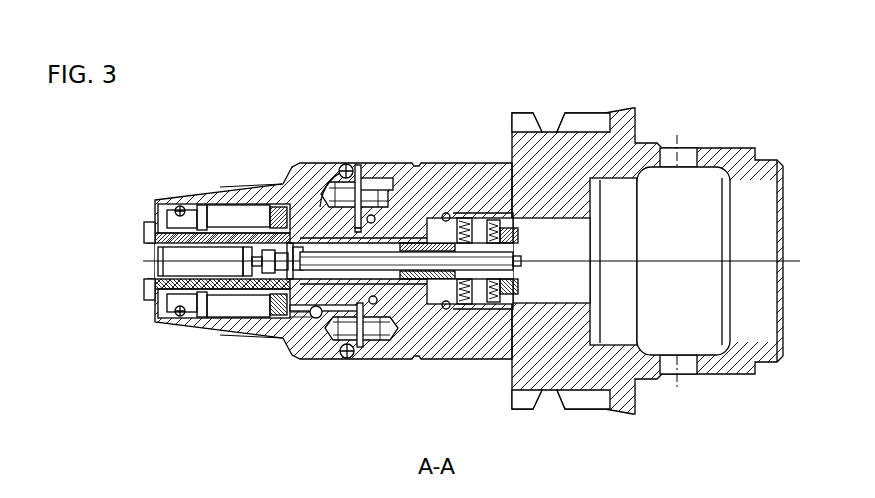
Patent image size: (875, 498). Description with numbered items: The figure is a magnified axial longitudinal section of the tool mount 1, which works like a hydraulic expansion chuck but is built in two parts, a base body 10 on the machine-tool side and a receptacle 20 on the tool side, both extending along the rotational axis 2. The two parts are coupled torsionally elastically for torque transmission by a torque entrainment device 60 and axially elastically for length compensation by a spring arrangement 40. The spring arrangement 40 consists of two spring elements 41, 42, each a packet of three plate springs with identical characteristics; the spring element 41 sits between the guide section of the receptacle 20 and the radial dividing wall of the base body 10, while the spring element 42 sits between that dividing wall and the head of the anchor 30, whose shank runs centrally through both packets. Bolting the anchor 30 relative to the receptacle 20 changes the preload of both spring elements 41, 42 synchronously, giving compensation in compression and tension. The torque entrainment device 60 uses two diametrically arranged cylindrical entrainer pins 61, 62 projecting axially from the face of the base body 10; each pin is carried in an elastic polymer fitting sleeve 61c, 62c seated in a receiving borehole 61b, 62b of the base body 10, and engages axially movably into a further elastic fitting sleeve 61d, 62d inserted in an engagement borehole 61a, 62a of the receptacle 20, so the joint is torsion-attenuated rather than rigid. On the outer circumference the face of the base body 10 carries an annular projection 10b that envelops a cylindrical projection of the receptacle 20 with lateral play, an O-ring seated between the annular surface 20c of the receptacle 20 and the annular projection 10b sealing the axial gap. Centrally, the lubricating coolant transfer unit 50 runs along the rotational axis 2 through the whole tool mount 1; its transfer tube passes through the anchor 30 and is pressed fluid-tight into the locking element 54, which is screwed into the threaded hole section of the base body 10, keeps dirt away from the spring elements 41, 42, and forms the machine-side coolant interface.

The tool mount 1 is at (666, 106).
The rotational axis 2 is at (755, 258).
The base body 10 is at (633, 408).
The annular projection 10b is at (362, 168).
The receptacle 20 is at (296, 353).
The annular surface 20c is at (349, 358).
The anchor 30 is at (418, 240).
The spring arrangement 40 is at (490, 312).
The spring element 41 is at (463, 302).
The spring element 42 is at (497, 302).
The lubricating coolant transfer unit 50 is at (362, 200).
The locking element 54 is at (536, 240).
The torque entrainment device 60 is at (357, 197).
The entrainer pin 61 is at (381, 168).
The engagement borehole 61a is at (300, 198).
The receiving borehole 61b is at (373, 178).
The fitting sleeve 61c is at (382, 347).
The fitting sleeve 61d is at (335, 185).
The entrainer pin 62 is at (388, 350).
The engagement borehole 62a is at (328, 342).
The lower screw 62b is at (378, 342).
The fitting sleeve 62c is at (380, 232).
The fitting sleeve 62d is at (340, 342).